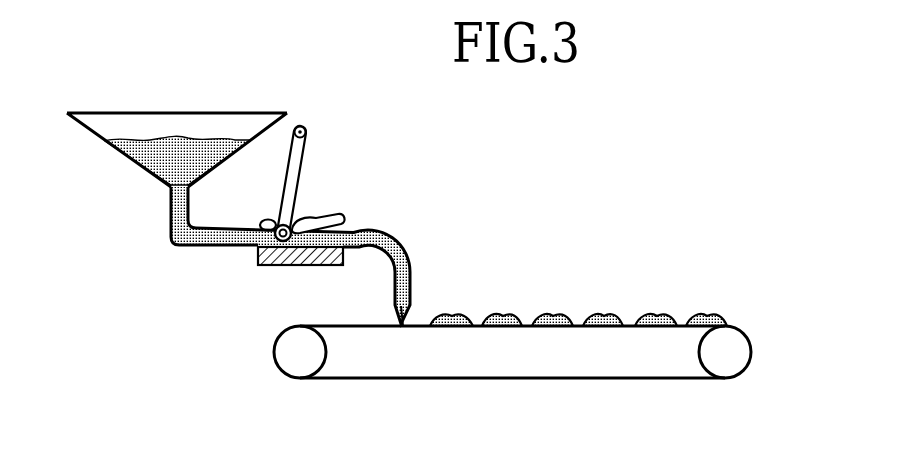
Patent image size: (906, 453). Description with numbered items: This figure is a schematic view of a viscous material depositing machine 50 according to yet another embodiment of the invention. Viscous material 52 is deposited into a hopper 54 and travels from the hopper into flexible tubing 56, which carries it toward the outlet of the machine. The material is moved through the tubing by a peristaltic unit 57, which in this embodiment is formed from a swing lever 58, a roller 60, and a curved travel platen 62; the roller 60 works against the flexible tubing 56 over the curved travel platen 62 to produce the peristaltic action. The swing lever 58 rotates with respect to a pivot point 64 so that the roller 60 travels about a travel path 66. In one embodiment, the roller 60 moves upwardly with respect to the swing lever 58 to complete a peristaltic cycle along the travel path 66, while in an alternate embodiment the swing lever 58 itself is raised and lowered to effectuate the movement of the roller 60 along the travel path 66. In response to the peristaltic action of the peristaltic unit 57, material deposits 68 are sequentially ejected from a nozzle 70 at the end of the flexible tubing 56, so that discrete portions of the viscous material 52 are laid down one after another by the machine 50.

The viscous material depositing machine 50 is at (554, 210).
The viscous material 52 is at (142, 140).
The hopper 54 is at (228, 113).
The flexible tubing 56 is at (171, 228).
The peristaltic unit 57 is at (385, 214).
The swing lever 58 is at (328, 140).
The roller 60 is at (297, 217).
The curved travel platen 62 is at (258, 265).
The pivot point 64 is at (302, 127).
The travel path 66 is at (308, 222).
The material deposits 68 is at (508, 315).
The nozzle 70 is at (413, 303).